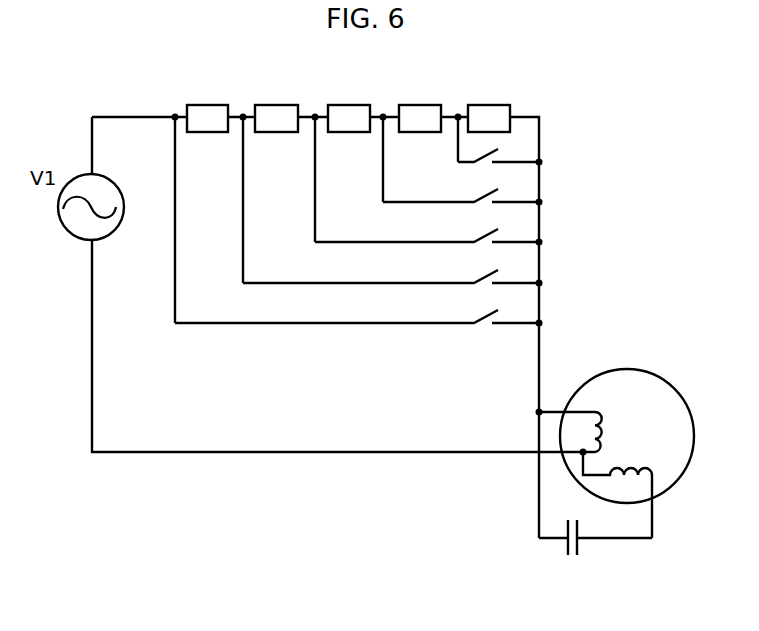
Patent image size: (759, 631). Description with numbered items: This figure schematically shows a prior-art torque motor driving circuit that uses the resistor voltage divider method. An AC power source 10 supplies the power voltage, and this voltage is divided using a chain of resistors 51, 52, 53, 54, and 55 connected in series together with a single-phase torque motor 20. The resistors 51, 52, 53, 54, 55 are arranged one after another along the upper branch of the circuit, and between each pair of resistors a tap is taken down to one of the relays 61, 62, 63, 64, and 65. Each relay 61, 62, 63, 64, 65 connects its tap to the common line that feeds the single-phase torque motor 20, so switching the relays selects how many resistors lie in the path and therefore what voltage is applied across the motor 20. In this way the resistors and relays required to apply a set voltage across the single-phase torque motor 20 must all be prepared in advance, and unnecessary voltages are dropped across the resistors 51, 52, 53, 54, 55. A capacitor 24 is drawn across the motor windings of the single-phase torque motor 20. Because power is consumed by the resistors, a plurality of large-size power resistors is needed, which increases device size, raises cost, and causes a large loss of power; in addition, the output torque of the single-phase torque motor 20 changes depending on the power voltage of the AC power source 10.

The AC power source 10 is at (68, 233).
The resistor 51 is at (205, 105).
The resistor 52 is at (275, 105).
The resistor 53 is at (348, 105).
The resistor 54 is at (418, 105).
The resistor 55 is at (488, 105).
The relay 61 is at (480, 167).
The relay 62 is at (480, 207).
The relay 63 is at (480, 247).
The relay 64 is at (480, 288).
The relay 65 is at (480, 329).
The single-phase torque motor 20 is at (627, 368).
The capacitor 24 is at (572, 557).